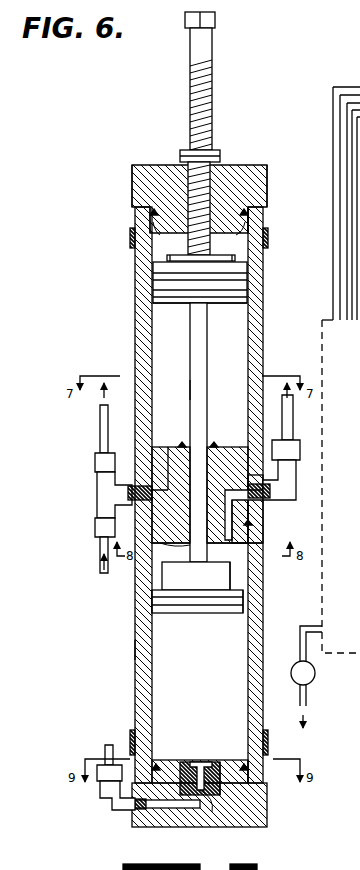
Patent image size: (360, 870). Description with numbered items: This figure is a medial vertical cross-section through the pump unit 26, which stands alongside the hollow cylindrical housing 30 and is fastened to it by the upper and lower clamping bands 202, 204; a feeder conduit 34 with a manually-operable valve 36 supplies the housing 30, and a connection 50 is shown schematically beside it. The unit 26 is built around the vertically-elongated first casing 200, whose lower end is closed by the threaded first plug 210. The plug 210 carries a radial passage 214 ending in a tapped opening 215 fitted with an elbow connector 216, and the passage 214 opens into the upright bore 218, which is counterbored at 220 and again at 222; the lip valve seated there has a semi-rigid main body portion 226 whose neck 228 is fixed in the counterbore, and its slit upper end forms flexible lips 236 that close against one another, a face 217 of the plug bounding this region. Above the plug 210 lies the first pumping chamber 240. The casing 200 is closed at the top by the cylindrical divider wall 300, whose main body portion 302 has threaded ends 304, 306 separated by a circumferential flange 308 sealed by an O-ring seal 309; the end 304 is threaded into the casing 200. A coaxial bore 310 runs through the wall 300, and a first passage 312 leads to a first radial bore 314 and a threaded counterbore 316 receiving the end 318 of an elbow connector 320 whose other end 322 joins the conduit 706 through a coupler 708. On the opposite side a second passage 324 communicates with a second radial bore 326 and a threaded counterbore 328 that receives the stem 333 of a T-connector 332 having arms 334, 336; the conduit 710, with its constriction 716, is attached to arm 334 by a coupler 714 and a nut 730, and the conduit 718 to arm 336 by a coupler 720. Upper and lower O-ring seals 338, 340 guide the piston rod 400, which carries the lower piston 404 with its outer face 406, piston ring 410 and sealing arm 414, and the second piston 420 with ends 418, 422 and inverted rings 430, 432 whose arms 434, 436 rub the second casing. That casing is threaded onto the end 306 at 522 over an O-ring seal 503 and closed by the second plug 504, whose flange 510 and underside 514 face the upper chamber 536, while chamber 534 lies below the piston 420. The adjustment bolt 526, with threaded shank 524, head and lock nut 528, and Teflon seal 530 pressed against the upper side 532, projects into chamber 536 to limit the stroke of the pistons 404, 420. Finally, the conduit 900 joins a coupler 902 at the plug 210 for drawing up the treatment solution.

The unit 26 is at (133, 647).
The housing 30 is at (322, 591).
The feeder conduit 34 is at (302, 630).
The manually-operable valve 36 is at (316, 676).
The electrical connection 50 is at (341, 369).
The first casing 200 is at (135, 680).
The upper clamping band 202 is at (269, 240).
The lower clamping band 204 is at (269, 746).
The first plug 210 is at (267, 815).
The radial passage 214 is at (204, 805).
The tapped opening 215 is at (142, 825).
The elbow connector 216 is at (120, 810).
The base inner wall 217 is at (263, 779).
The upright bore 218 is at (202, 812).
The counterbore 220 is at (236, 812).
The counterbore 222 is at (212, 762).
The main body portion 226 is at (170, 768).
The neck 228 is at (186, 805).
The flexible lip 236 is at (204, 760).
The first pumping chamber 240 is at (160, 705).
The divider wall 300 is at (231, 446).
The main body portion 302 is at (171, 527).
The threaded end 304 is at (173, 551).
The threaded end 306 is at (173, 445).
The circumferential flange 308 is at (265, 518).
The O-ring seal 309 is at (258, 528).
The coaxial bore 310 is at (223, 467).
The first passage 312 is at (250, 545).
The first radial bore 314 is at (238, 508).
The internally-threaded counterbore 316 is at (270, 485).
The elbow connector end 318 is at (263, 498).
The elbow connector 320 is at (298, 485).
The elbow connector end 322 is at (270, 490).
The second passage 324 is at (150, 465).
The second radial bore 326 is at (133, 524).
The threaded counterbore 328 is at (115, 487).
The T-connector 332 is at (98, 497).
The stem 333 is at (105, 522).
The crosshead arm 334 is at (100, 483).
The crosshead arm 336 is at (128, 493).
The upper O-ring seal 338 is at (213, 440).
The lower O-ring seal 340 is at (190, 545).
The piston rod 400 is at (207, 378).
The cylindrical piston 404 is at (233, 580).
The outer face 406 is at (230, 614).
The piston ring 410 is at (202, 600).
The outer flexible annular arm 414 is at (152, 592).
The piston end 418 is at (180, 312).
The second piston 420 is at (248, 280).
The piston end 422 is at (165, 248).
The piston ring 430 is at (160, 302).
The piston ring 432 is at (155, 272).
The flexible annular arm 434 is at (248, 297).
The flexible annular arm 436 is at (248, 268).
The O-ring seal 503 is at (298, 455).
The second plug 504 is at (225, 178).
The flange 510 is at (267, 175).
The underside 514 is at (258, 205).
The internally-threaded bore 522 is at (240, 185).
The threaded shank 524 is at (213, 108).
The adjustment bolt 526 is at (213, 60).
The lock nut 528 is at (215, 19).
The Teflon seal 530 is at (181, 156).
The upper side 532 is at (134, 167).
The pumping chamber 534 is at (240, 326).
The pumping chamber 536 is at (262, 224).
The conduit 706 is at (293, 420).
The coupler 708 is at (300, 449).
The conduit 710 is at (106, 410).
The coupler 714 is at (97, 468).
The constriction 716 is at (99, 445).
The conduit 718 is at (100, 560).
The coupler 720 is at (112, 516).
The nut 730 is at (95, 459).
The conduit 900 is at (105, 750).
The coupler 902 is at (105, 792).